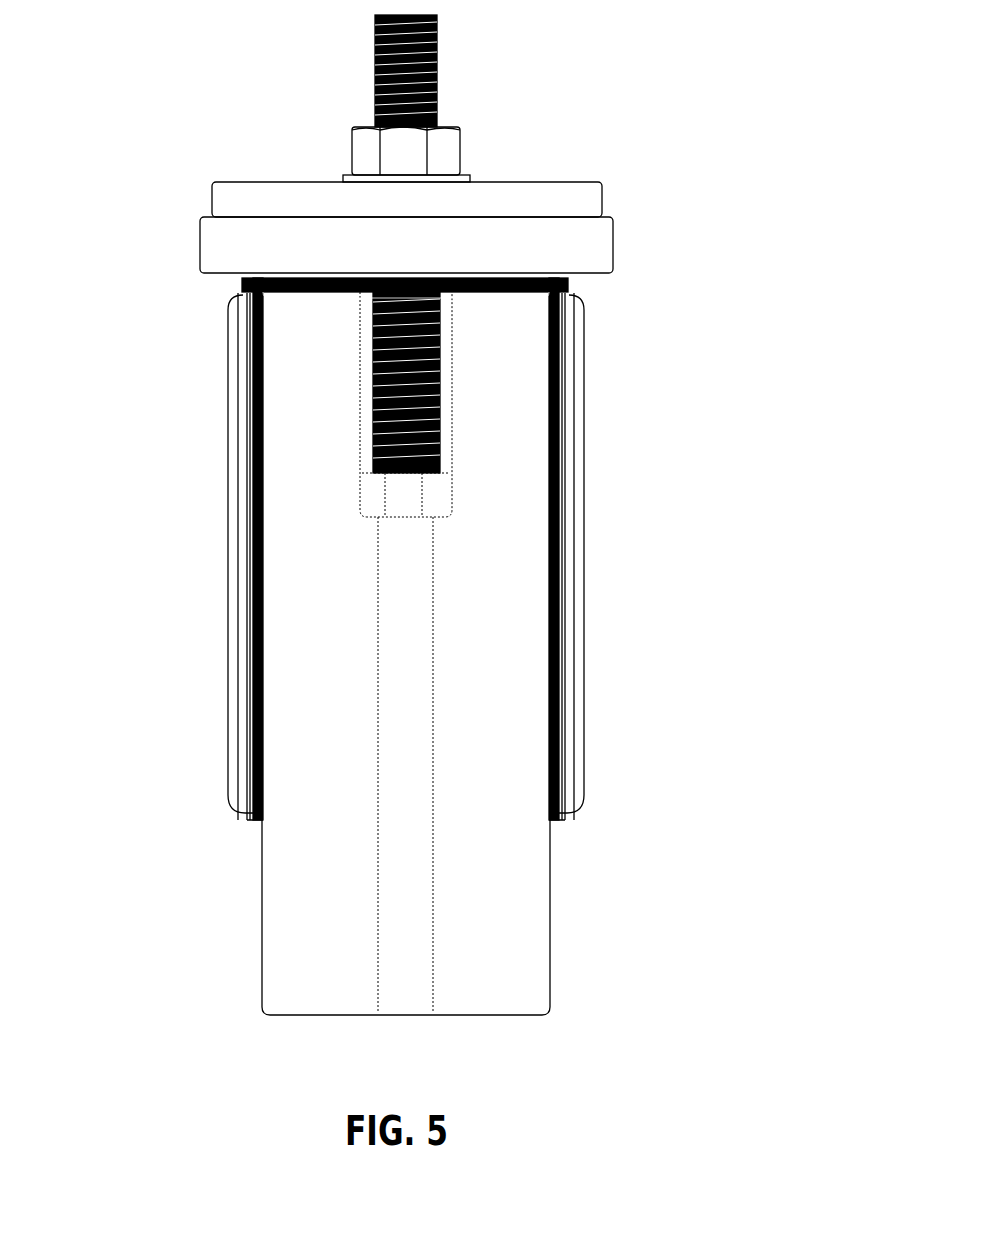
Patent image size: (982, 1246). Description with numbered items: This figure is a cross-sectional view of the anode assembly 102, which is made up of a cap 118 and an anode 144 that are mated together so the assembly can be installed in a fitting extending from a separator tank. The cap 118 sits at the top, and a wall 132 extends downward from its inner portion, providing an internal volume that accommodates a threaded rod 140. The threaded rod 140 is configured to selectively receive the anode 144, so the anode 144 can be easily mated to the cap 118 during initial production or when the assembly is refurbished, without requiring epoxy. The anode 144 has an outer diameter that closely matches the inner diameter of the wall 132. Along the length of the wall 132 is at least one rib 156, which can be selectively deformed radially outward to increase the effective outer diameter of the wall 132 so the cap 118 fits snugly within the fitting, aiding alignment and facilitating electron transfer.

The anode assembly 102 is at (133, 216).
The cap 118 is at (710, 10).
The threaded rod 140 is at (438, 412).
The rib 156 is at (233, 630).
The wall 132 is at (245, 767).
The anode 144 is at (322, 863).